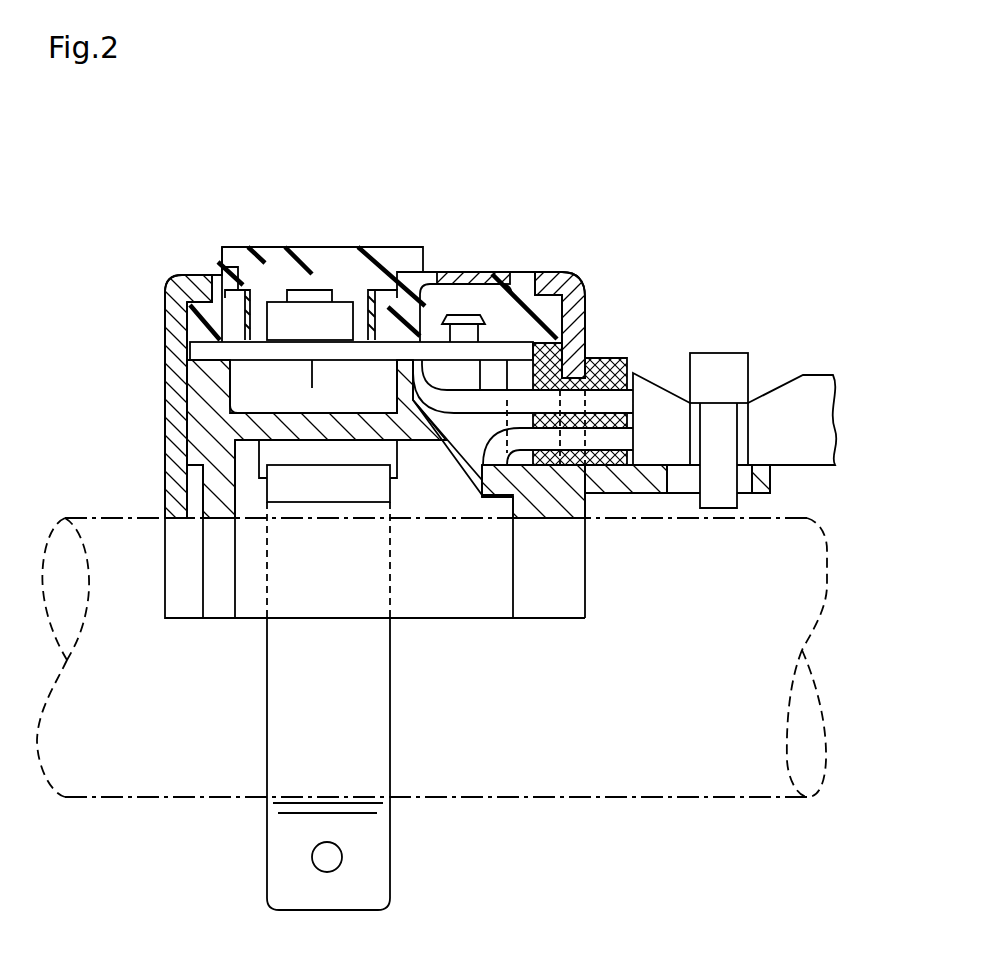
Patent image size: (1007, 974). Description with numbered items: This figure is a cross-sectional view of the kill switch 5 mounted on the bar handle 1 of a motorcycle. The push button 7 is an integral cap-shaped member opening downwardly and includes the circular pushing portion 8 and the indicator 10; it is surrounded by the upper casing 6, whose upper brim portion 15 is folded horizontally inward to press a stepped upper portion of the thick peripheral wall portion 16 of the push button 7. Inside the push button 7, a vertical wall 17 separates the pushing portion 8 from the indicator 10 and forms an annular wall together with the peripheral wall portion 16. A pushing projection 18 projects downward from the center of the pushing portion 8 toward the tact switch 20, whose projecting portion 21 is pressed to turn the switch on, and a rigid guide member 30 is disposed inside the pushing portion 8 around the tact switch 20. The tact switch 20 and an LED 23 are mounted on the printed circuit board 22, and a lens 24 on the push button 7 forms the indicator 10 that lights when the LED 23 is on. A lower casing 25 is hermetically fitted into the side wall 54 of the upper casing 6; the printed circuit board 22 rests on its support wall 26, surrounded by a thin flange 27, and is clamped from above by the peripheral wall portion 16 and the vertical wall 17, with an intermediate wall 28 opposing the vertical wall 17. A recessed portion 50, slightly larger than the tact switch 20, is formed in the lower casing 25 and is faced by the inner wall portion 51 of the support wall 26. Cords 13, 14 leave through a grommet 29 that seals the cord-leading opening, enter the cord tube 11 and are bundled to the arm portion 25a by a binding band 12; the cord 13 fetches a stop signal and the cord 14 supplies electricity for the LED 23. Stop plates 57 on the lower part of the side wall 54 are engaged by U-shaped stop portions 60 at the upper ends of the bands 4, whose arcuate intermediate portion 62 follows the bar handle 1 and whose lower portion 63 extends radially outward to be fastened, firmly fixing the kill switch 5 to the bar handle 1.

The bar handle 1 is at (633, 797).
The band 4 is at (266, 750).
The kill switch 5 is at (662, 195).
The upper casing 6 is at (155, 348).
The push button 7 is at (249, 226).
The pushing portion 8 is at (362, 243).
The indicator 10 is at (548, 315).
The cord tube 11 is at (815, 383).
The binding band 12 is at (715, 362).
The cord 13 is at (453, 400).
The cord 14 is at (490, 440).
The upper brim portion 15 is at (185, 275).
The peripheral wall portion 16 is at (168, 292).
The vertical wall 17 is at (420, 332).
The pushing projection 18 is at (315, 291).
The tact switch 20 is at (277, 312).
The projecting portion 21 is at (322, 293).
The printed circuit board 22 is at (228, 398).
The LED 23 is at (492, 300).
The lens 24 is at (469, 314).
The lower casing 25 is at (200, 445).
The arm portion 25a is at (617, 485).
The support wall 26 is at (205, 418).
The flange 27 is at (160, 335).
The intermediate wall 28 is at (398, 367).
The grommet 29 is at (598, 362).
The guide member 30 is at (240, 316).
The recessed portion 50 is at (333, 395).
The inner wall portion 51 is at (360, 378).
The side wall 54 is at (167, 382).
The stop plate 57 is at (445, 612).
The stop portion 60 is at (288, 488).
The intermediate portion 62 is at (378, 717).
The lower portion 63 is at (363, 841).